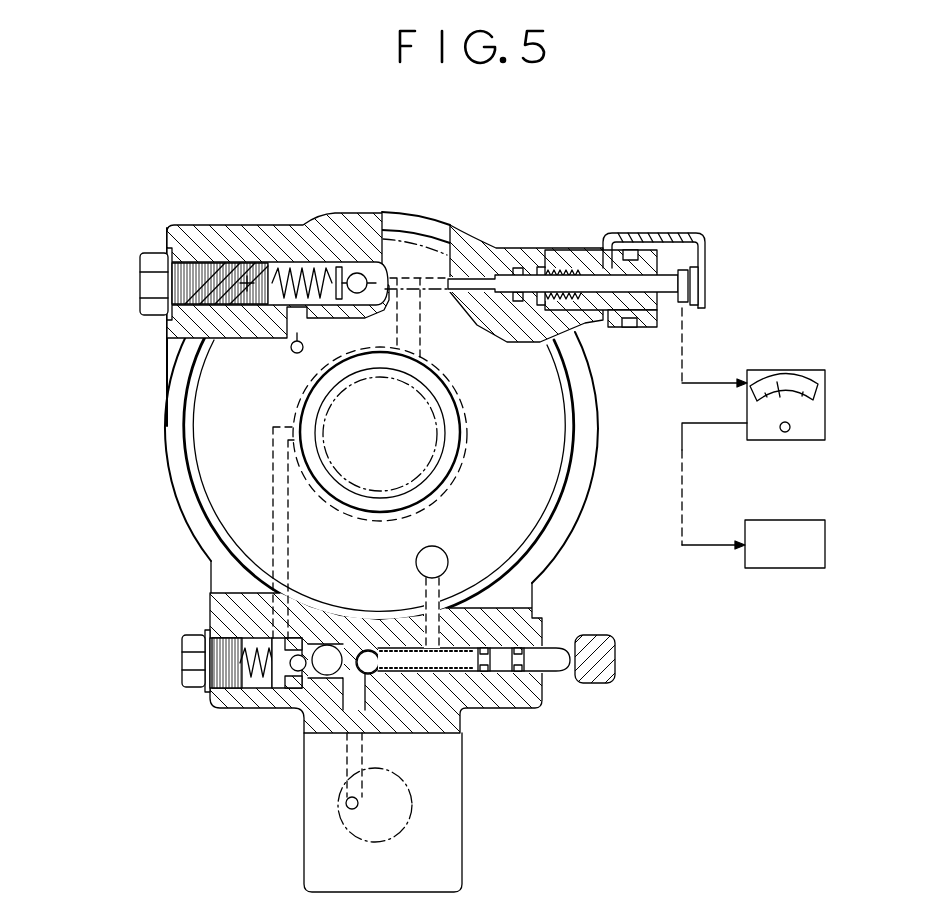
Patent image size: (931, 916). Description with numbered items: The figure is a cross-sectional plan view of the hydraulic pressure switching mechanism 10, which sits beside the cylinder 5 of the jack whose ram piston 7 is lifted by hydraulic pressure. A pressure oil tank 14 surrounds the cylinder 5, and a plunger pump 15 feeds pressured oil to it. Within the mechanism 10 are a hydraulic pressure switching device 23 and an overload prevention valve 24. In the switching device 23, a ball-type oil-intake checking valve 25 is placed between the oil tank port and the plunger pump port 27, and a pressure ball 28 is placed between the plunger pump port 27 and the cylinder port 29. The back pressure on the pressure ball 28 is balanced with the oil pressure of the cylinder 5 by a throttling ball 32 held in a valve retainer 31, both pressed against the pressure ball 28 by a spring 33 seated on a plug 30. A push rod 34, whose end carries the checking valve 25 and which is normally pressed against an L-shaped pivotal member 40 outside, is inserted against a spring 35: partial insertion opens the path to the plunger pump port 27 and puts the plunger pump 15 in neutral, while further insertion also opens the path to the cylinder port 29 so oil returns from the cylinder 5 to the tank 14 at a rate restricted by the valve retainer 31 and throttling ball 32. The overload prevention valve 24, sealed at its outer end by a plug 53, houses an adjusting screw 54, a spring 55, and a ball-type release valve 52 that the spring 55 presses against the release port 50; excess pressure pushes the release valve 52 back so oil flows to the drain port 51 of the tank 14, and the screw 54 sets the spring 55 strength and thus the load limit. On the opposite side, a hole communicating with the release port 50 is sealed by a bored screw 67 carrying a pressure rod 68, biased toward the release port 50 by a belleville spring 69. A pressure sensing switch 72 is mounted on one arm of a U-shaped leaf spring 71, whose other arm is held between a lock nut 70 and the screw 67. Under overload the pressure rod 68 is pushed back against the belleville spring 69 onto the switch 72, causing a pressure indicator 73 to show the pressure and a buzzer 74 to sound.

The cylinder 5 is at (443, 410).
The ram piston 7 is at (410, 386).
The hydraulic pressure switching mechanism 10 is at (167, 396).
The pressure oil tank 14 is at (571, 420).
The plunger pump 15 is at (420, 828).
The hydraulic pressure switching device 23 is at (167, 653).
The overload prevention valve 24 is at (319, 243).
The oil-intake checking valve 25 is at (378, 668).
The plunger pump port 27 is at (348, 806).
The pressure ball 28 is at (336, 657).
The cylinder port 29 is at (298, 662).
The plug 30 is at (192, 680).
The valve retainer 31 is at (282, 688).
The throttling ball 32 is at (300, 675).
The spring 33 is at (252, 690).
The push rod 34 is at (553, 668).
The spring 35 is at (410, 648).
The L-shaped pivotal member 40 is at (617, 662).
The release port 50 is at (447, 318).
The drain port 51 is at (292, 353).
The release valve 52 is at (409, 317).
The plug 53 is at (150, 287).
The adjusting screw 54 is at (262, 260).
The spring 55 is at (350, 268).
The bored screw 67 is at (648, 328).
The pressure rod 68 is at (668, 283).
The belleville spring 69 is at (566, 262).
The lock nut 70 is at (636, 233).
The U-shaped leaf spring 71 is at (685, 233).
The pressure sensing switch 72 is at (706, 280).
The pressure indicator 73 is at (772, 370).
The buzzer 74 is at (778, 520).